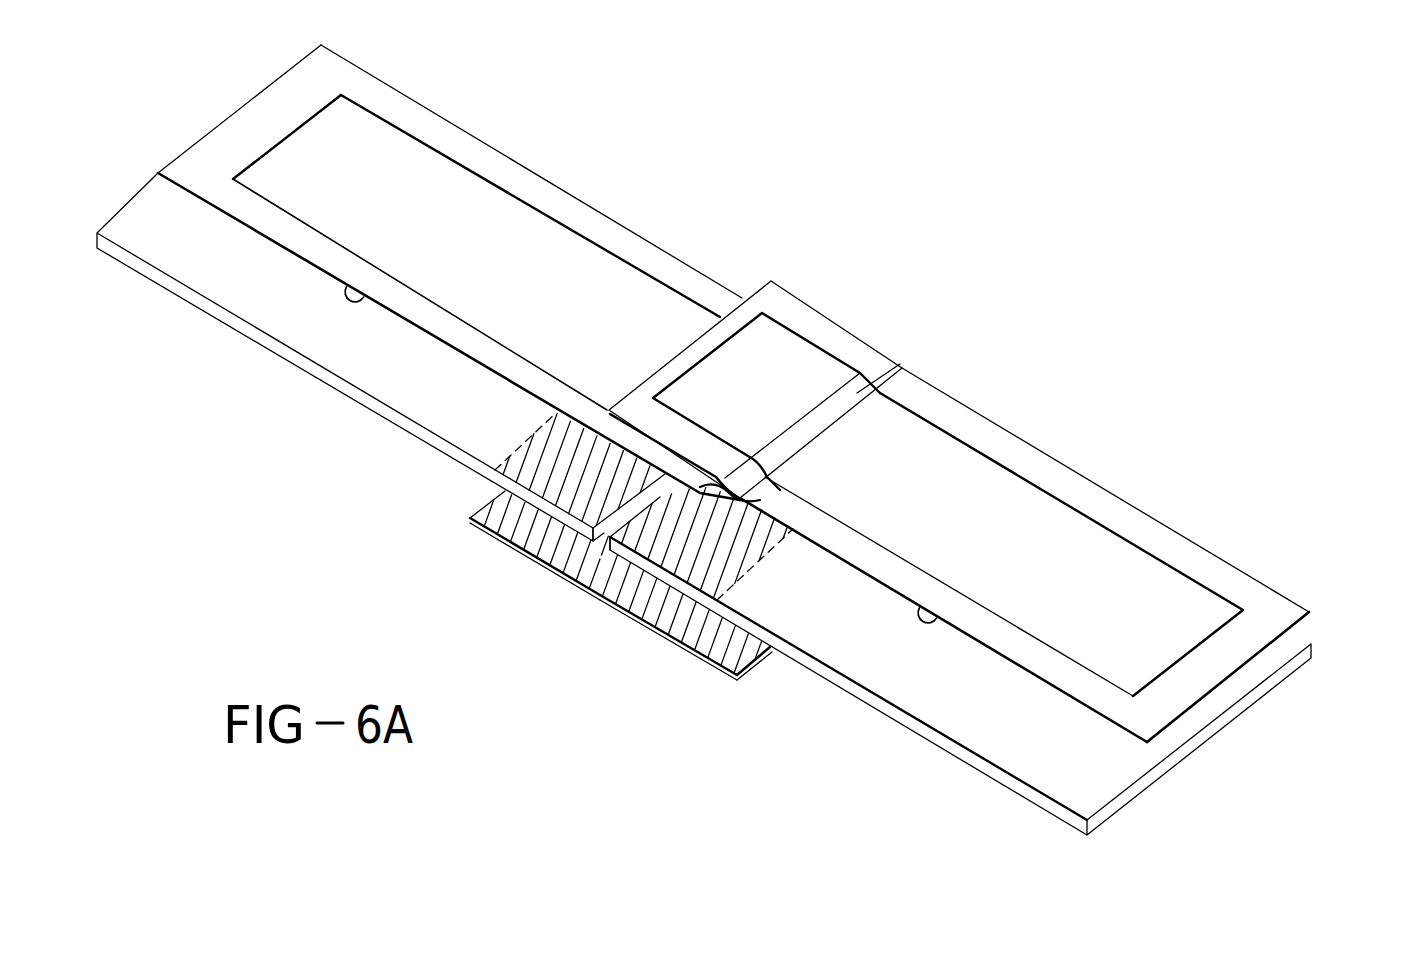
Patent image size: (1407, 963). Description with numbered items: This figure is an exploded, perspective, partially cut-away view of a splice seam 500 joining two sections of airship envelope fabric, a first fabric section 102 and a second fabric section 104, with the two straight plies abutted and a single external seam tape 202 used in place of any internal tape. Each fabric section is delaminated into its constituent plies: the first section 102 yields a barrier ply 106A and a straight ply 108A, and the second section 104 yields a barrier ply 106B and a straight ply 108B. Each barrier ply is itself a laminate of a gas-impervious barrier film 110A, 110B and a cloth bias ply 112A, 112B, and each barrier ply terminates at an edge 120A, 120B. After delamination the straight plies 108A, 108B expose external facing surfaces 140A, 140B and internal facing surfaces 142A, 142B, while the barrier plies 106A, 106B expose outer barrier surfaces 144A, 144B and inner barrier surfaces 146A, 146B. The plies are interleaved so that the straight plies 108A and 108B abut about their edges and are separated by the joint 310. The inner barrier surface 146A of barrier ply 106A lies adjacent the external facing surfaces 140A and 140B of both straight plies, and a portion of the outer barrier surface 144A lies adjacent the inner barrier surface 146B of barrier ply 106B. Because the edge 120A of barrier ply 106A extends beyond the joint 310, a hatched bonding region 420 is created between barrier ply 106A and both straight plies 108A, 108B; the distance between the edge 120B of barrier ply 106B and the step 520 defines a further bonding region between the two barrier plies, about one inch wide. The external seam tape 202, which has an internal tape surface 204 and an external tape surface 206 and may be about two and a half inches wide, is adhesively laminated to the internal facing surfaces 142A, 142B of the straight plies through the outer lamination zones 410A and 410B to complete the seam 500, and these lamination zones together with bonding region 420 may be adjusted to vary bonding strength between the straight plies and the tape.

The splice seam 500 is at (1106, 258).
The first fabric section 102 is at (92, 165).
The second fabric section 104 is at (1318, 587).
The barrier ply 106A is at (232, 110).
The barrier ply 106B is at (1228, 558).
The straight ply 108A is at (173, 286).
The straight ply 108B is at (1042, 814).
The barrier film 110A is at (393, 174).
The barrier film 110B is at (1144, 608).
The cloth bias ply 112A is at (432, 135).
The cloth bias ply 112B is at (1132, 525).
The edge of barrier ply 120A is at (777, 503).
The edge of barrier ply 120B is at (722, 300).
The external facing surface 140A is at (277, 276).
The external facing surface 140B is at (994, 690).
The internal facing surface 142A is at (262, 350).
The internal facing surface 142B is at (878, 705).
The outer barrier surface 144A is at (515, 235).
The outer barrier surface 144B is at (1035, 513).
The inner barrier surface 146A is at (360, 302).
The inner barrier surface 146B is at (930, 620).
The external seam tape 202 is at (478, 502).
The internal tape surface 204 is at (737, 678).
The external tape surface 206 is at (770, 652).
The joint 310 is at (601, 559).
The lamination zone 410A is at (522, 530).
The lamination zone 410B is at (653, 603).
The bonding region 420 is at (555, 468).
The step 520 is at (857, 393).